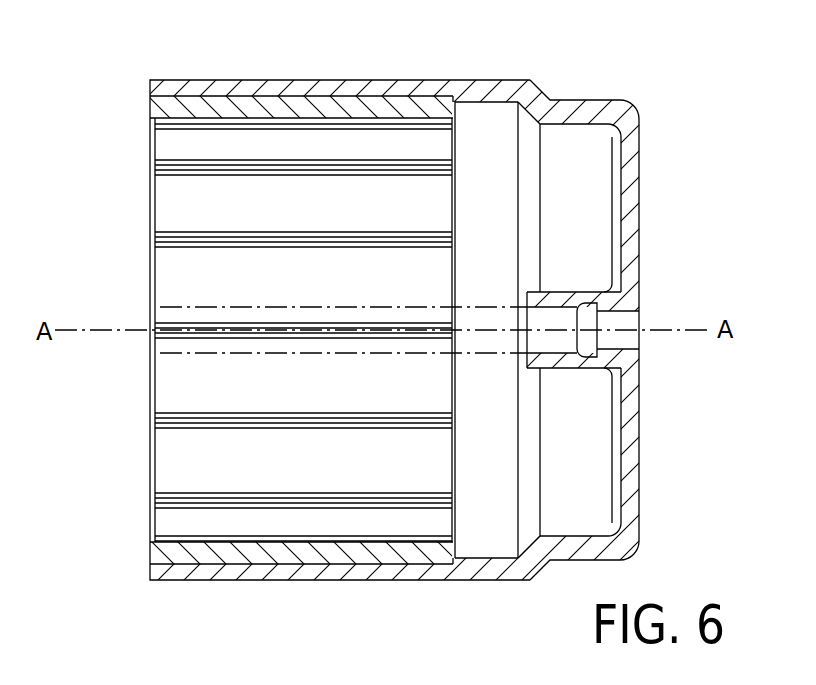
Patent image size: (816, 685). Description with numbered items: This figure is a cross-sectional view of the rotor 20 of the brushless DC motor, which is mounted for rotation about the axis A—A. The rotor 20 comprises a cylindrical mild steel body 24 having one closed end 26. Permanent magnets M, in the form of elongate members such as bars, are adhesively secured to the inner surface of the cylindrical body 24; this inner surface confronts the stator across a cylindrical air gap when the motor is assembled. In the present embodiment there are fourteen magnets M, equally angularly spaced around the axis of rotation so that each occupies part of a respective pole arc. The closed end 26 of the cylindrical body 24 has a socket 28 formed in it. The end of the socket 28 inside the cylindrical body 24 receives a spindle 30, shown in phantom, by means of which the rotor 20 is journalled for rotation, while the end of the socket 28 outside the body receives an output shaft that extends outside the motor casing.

The rotor 20 is at (136, 100).
The cylindrical mild steel body 24 is at (477, 80).
The closed end 26 is at (630, 212).
The socket 28 is at (591, 283).
The spindle 30 is at (337, 310).
The permanent magnets M is at (168, 272).